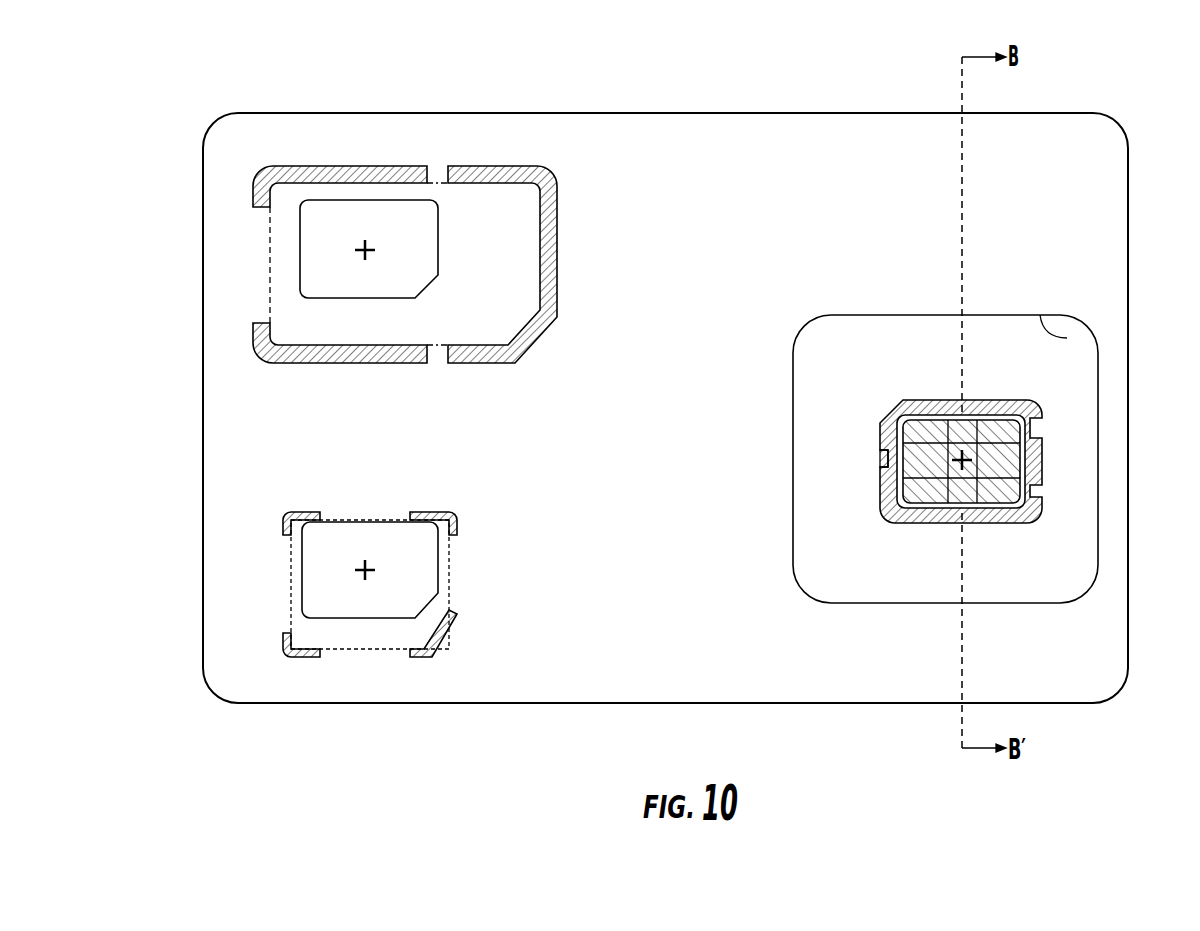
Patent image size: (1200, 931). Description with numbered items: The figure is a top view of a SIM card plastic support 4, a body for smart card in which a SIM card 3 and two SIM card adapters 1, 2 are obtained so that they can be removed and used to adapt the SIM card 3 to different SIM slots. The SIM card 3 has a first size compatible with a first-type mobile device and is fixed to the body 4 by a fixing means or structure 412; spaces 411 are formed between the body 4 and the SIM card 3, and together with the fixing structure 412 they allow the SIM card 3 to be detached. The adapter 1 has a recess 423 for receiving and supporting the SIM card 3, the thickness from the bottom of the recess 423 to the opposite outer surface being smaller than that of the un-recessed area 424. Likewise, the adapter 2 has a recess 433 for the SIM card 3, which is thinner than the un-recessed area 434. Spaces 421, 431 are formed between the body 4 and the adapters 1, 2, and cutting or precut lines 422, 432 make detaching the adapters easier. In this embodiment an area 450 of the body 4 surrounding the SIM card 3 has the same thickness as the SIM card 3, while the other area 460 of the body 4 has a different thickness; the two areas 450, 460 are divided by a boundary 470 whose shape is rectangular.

The SIM card adapter 1 is at (398, 213).
The SIM card adapter 2 is at (342, 599).
The SIM card 3 is at (1013, 495).
The SIM card plastic support 4 is at (1140, 768).
The spaces 411 is at (925, 400).
The fixing means or structure 412 is at (890, 462).
The spaces 421 is at (345, 167).
The cutting line or precut line 422 is at (268, 305).
The recess 423 is at (409, 238).
The un-recessed area 424 is at (470, 313).
The spaces 431 is at (313, 512).
The cutting line or precut line 432 is at (297, 572).
The recess 433 is at (393, 568).
The un-recessed area 434 is at (397, 635).
The area 450 is at (969, 433).
The other area 460 is at (1080, 243).
The boundary 470 is at (1067, 338).